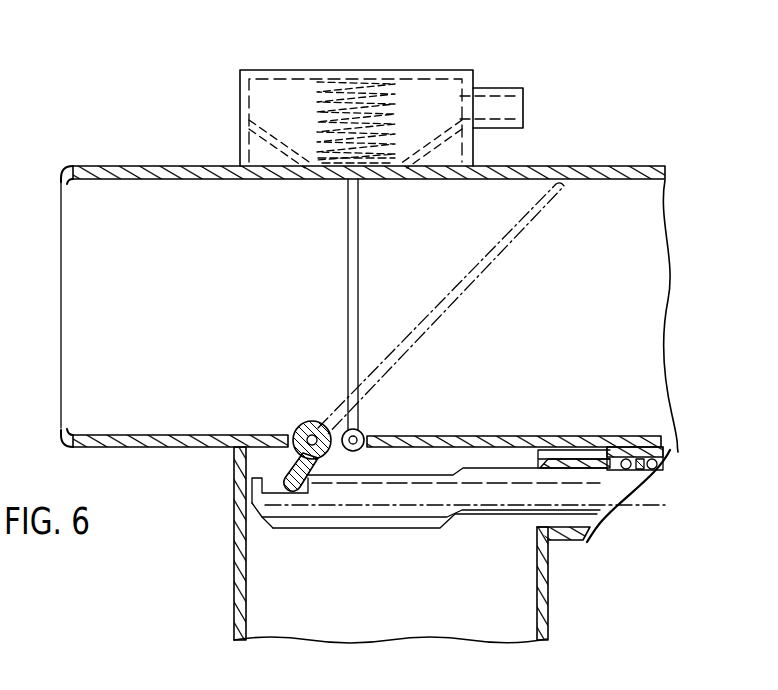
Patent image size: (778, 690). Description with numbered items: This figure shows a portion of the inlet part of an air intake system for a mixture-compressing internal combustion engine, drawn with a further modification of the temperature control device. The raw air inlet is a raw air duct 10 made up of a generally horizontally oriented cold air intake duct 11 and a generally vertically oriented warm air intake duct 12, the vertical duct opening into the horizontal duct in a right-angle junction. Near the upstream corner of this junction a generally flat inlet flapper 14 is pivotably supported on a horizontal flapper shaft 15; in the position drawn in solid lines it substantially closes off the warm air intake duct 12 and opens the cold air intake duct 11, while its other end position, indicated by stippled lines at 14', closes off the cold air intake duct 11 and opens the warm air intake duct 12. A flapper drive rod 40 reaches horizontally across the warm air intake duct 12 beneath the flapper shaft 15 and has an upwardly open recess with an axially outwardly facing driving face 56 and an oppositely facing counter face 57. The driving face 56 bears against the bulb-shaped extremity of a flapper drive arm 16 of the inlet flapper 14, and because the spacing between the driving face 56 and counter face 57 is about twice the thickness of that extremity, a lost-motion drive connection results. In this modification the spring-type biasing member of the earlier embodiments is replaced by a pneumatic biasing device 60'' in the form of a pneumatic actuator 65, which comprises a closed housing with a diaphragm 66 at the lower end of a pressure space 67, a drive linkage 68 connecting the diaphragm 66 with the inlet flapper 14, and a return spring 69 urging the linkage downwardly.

The raw air duct 10 is at (604, 166).
The cold air intake duct 11 is at (98, 233).
The warm air intake duct 12 is at (260, 578).
The inlet flapper 14 is at (514, 410).
The inlet flapper other end position 14' is at (441, 309).
The flapper shaft 15 is at (312, 437).
The flapper drive arm 16 is at (298, 472).
The flapper drive rod 40 is at (371, 534).
The driving face 56 is at (299, 496).
The counter face 57 is at (267, 520).
The pneumatic biasing device 60'' is at (381, 94).
The pneumatic actuator 65 is at (300, 68).
The diaphragm 66 is at (272, 136).
The pressure space 67 is at (415, 105).
The drive linkage 68 is at (349, 278).
The return spring 69 is at (339, 80).